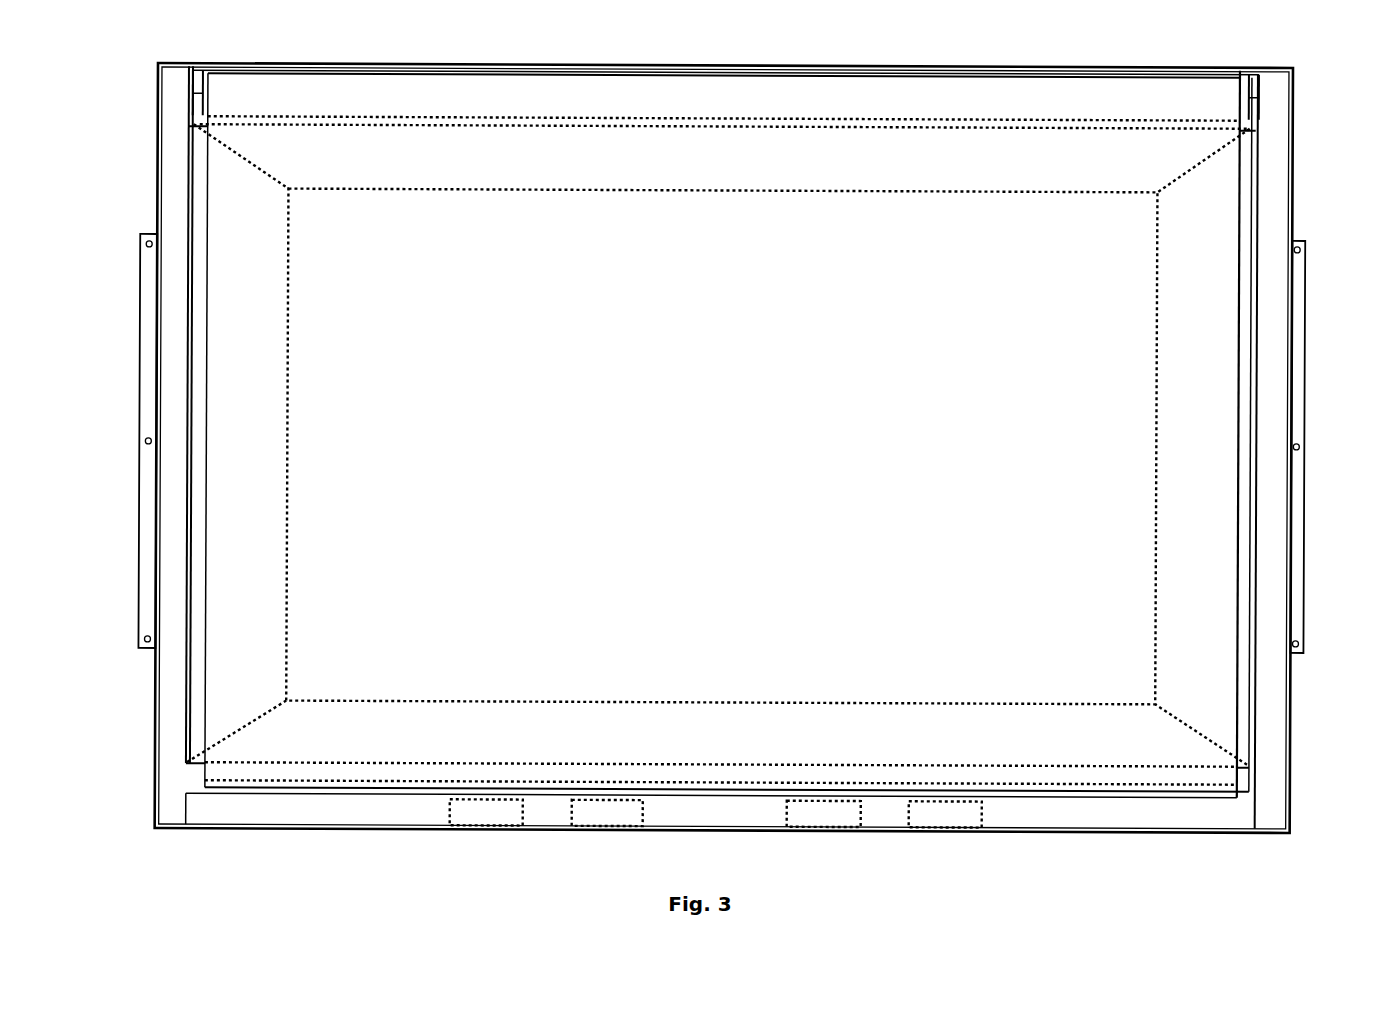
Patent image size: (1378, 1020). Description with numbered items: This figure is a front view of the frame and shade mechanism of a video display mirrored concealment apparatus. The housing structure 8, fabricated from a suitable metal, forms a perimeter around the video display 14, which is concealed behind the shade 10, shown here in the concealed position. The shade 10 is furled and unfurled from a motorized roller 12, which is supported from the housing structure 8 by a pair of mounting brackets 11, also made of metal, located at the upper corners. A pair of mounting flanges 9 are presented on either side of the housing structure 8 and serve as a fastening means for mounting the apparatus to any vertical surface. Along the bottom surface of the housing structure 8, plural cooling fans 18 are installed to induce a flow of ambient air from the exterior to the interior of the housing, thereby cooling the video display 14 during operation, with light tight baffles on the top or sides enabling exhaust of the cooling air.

The housing structure 8 is at (158, 145).
The mounting flanges 9 is at (141, 410).
The shade 10 is at (208, 423).
The mounting brackets 11 is at (200, 92).
The motorized roller 12 is at (762, 117).
The video display 14 is at (193, 315).
The cooling fans 18 is at (526, 810).